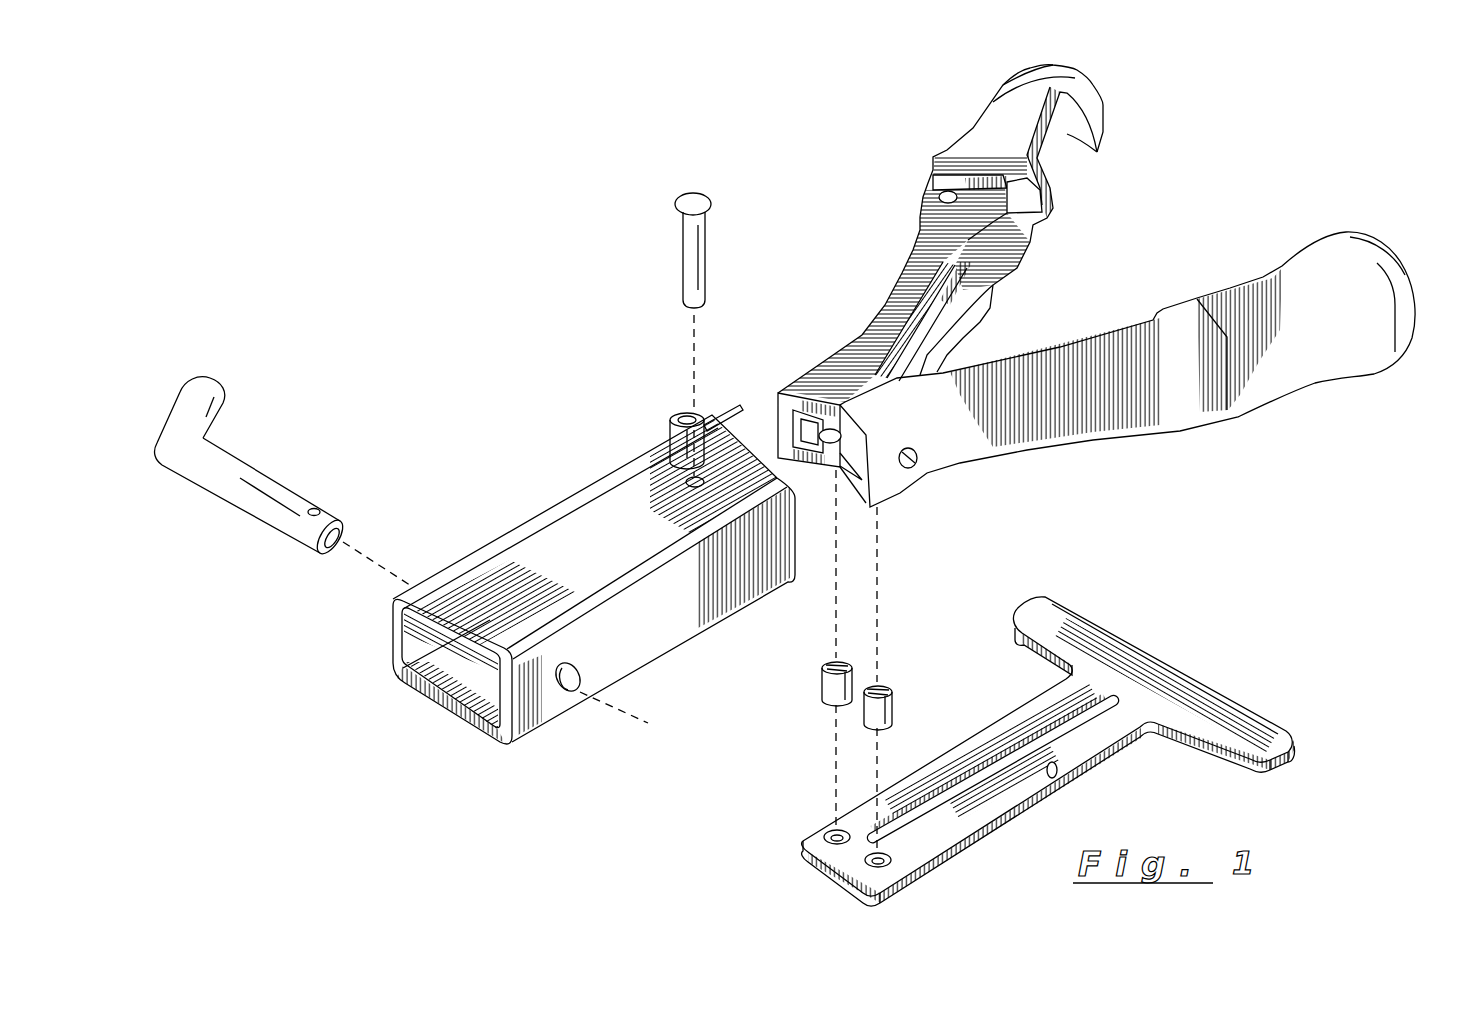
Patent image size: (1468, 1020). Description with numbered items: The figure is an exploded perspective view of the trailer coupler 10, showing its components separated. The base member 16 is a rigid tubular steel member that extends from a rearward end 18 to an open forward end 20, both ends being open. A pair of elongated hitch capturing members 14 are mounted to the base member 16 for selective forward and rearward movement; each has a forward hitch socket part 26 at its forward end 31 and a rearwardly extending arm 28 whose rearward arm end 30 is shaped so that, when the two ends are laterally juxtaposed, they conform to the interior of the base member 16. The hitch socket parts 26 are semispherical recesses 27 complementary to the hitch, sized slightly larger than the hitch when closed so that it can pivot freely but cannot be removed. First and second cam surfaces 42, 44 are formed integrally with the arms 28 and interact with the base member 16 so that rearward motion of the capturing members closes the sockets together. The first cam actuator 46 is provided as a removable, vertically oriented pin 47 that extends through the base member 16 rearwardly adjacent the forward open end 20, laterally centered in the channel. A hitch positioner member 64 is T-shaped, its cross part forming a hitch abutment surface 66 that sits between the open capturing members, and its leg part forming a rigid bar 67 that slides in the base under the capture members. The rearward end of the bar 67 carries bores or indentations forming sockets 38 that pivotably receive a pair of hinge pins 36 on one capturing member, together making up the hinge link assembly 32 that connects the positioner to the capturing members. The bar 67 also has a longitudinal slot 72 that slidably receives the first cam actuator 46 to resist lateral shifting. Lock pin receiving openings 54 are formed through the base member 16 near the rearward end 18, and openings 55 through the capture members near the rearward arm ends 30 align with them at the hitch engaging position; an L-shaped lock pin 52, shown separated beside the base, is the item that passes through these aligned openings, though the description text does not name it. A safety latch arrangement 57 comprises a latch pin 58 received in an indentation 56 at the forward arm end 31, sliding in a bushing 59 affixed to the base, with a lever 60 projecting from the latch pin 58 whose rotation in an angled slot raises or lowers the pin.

The trailer coupler 10 is at (1298, 138).
The hitch capturing members 14 is at (933, 163).
The base member 16 is at (706, 652).
The rearward end 18 is at (452, 721).
The open forward end 20 is at (802, 540).
The hitch socket part 26 is at (1080, 127).
The semispherical recess 27 is at (1087, 112).
The rearwardly extending arm 28 is at (822, 370).
The rearward arm end 30 is at (860, 488).
The forward end 31 is at (935, 183).
The hinge link assembly 32 is at (861, 718).
The hinge pins 36 is at (847, 665).
The sockets 38 is at (875, 856).
The first cam surface 42 is at (960, 365).
The second cam surface 44 is at (877, 315).
The first cam actuator 46 is at (684, 260).
The pin 47 is at (697, 243).
The hitch pin 52 is at (237, 470).
The base member lock pin openings 54 is at (570, 690).
The hitch capture member openings 55 is at (905, 468).
The indentation 56 is at (943, 202).
The safety latch arrangement 57 is at (644, 430).
The latch pin 58 is at (685, 413).
The bushing 59 is at (668, 447).
The lever 60 is at (722, 412).
The hitch positioner member 64 is at (1250, 692).
The hitch abutment surface 66 is at (1148, 632).
The rigid bar 67 is at (1052, 780).
The longitudinal slot 72 is at (1057, 723).